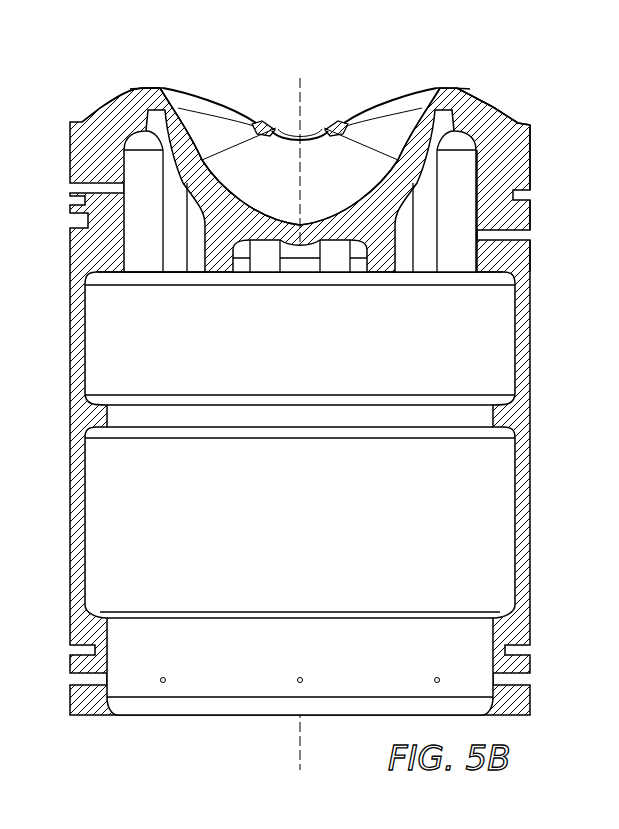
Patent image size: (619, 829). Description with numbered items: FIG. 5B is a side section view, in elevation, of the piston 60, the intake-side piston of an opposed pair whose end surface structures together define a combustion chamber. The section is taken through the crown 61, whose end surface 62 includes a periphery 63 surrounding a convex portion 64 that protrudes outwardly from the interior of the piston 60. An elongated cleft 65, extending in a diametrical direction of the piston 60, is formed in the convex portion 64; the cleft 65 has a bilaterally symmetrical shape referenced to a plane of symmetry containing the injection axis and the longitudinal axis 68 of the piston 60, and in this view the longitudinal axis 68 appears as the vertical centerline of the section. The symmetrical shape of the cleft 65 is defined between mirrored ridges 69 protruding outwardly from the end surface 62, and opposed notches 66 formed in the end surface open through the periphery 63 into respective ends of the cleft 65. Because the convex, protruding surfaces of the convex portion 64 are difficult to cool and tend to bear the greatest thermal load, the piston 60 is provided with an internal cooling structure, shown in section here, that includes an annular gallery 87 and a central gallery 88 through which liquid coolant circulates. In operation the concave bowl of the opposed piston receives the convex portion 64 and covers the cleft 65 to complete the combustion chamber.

The piston 60 is at (538, 343).
The crown 61 is at (530, 157).
The end surface 62 is at (117, 87).
The periphery 63 is at (523, 120).
The convex portion 64 is at (93, 110).
The elongated cleft 65 is at (287, 123).
The opposed notches 66 is at (313, 135).
The longitudinal axis 68 is at (300, 562).
The mirrored ridges 69 is at (147, 87).
The annular gallery 87 is at (457, 198).
The central gallery 88 is at (263, 265).